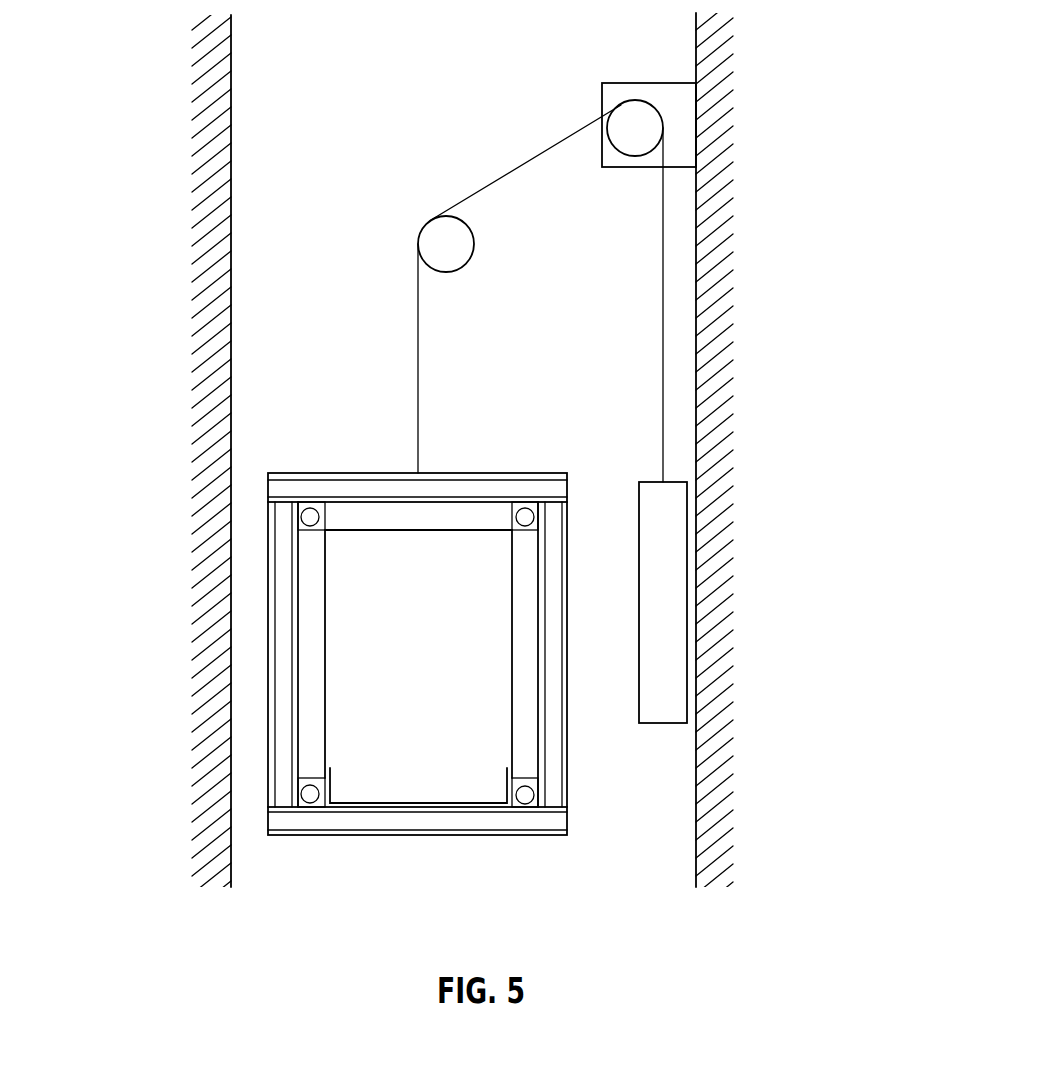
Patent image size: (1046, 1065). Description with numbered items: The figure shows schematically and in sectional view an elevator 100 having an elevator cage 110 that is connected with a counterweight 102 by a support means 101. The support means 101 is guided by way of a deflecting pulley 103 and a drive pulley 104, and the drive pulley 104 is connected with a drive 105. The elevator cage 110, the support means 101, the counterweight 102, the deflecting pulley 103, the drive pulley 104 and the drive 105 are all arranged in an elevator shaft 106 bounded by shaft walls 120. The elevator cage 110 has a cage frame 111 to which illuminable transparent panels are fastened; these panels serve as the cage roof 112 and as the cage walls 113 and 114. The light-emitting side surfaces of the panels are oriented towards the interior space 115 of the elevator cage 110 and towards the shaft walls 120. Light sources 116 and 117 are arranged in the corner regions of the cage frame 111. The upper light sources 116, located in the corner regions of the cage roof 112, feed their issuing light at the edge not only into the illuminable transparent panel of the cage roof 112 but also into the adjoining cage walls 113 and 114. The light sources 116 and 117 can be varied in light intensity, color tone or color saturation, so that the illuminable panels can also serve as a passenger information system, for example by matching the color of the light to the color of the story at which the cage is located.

The elevator 100 is at (156, 66).
The support means 101 is at (663, 269).
The counterweight 102 is at (665, 612).
The deflecting pulley 103 is at (436, 240).
The drive pulley 104 is at (640, 127).
The drive 105 is at (678, 153).
The elevator shaft 106 is at (282, 222).
The elevator cage 110 is at (469, 656).
The cage frame 111 is at (552, 763).
The cage roof 112 is at (470, 510).
The cage wall 113 is at (528, 673).
The cage wall 114 is at (308, 722).
The interior space 115 is at (364, 634).
The upper light sources 116 is at (301, 516).
The light sources 117 is at (310, 795).
The shaft walls 120 is at (713, 52).